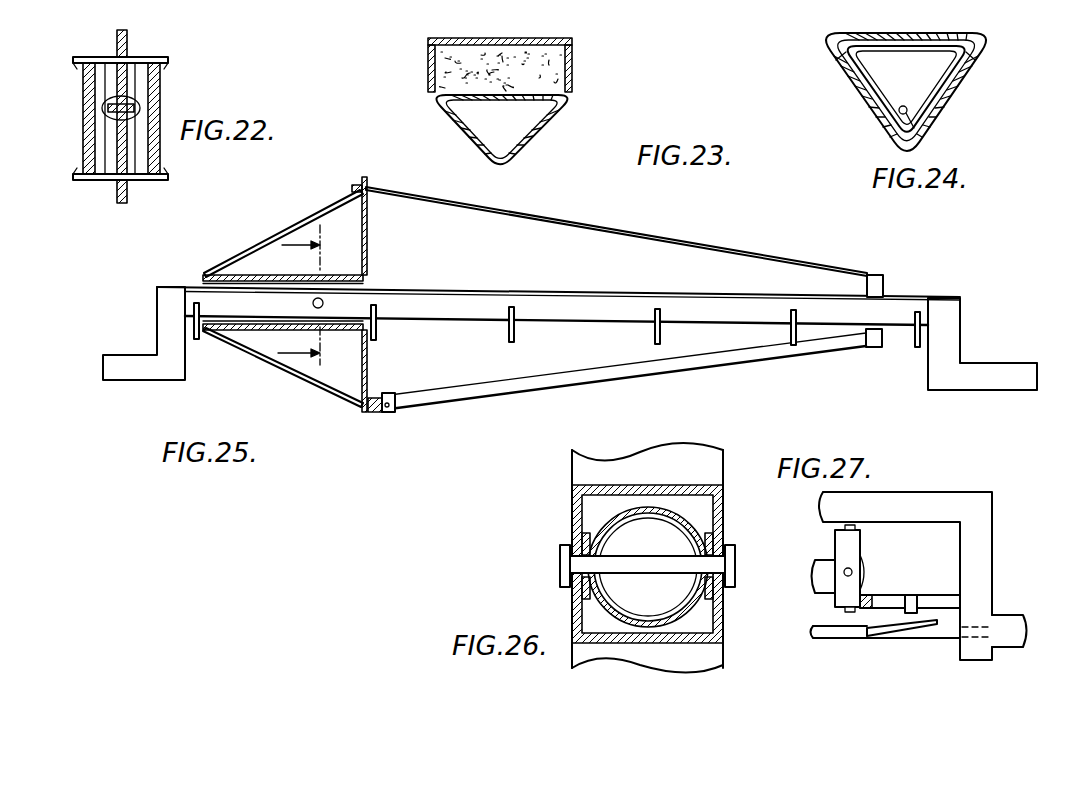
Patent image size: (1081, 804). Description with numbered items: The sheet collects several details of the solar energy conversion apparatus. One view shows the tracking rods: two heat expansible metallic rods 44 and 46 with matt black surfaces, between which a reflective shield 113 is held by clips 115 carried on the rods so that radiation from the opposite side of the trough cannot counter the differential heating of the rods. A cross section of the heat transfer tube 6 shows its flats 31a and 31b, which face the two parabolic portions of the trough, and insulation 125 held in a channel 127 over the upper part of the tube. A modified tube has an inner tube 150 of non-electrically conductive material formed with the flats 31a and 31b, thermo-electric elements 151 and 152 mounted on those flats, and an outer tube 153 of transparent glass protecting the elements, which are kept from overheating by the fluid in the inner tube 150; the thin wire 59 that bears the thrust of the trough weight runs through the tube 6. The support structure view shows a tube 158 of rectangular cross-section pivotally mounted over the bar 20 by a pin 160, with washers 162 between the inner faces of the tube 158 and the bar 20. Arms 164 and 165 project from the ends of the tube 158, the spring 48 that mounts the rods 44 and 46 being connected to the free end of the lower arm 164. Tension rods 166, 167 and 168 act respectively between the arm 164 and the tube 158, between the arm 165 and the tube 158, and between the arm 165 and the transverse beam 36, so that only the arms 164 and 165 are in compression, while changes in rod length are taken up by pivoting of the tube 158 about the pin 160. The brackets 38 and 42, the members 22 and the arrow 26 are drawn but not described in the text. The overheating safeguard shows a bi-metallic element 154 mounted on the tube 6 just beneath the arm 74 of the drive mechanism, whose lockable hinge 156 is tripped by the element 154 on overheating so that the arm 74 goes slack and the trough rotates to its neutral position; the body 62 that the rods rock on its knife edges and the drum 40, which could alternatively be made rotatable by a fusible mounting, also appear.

In FIG. 22, the reflective shield 113 is at (128, 38).
In FIG. 22, the clips 115 is at (103, 62).
In FIG. 22, the heat expansible metallic rod 44 is at (85, 137).
In FIG. 22, the heat expansible metallic rod 46 is at (150, 100).
In FIG. 25, the heat expansible metallic rod 46 is at (487, 392).
In FIG. 27, the heat expansible metallic rod 46 is at (830, 558).
In FIG. 23, the channel 127 is at (572, 74).
In FIG. 23, the insulation 125 is at (541, 73).
In FIG. 23, the heat transfer tube 6 is at (537, 113).
In FIG. 24, the heat transfer tube 6 is at (940, 68).
In FIG. 27, the heat transfer tube 6 is at (846, 637).
In FIG. 23, the flat 31a is at (443, 127).
In FIG. 24, the flat 31a is at (838, 75).
In FIG. 23, the flat 31b is at (538, 143).
In FIG. 24, the flat 31b is at (980, 78).
In FIG. 24, the inner tube 150 is at (822, 60).
In FIG. 24, the outer tube 153 is at (992, 67).
In FIG. 24, the thermo-electric element 151 is at (850, 113).
In FIG. 24, the thermo-electric element 152 is at (967, 117).
In FIG. 24, the thin wire 59 is at (930, 130).
In FIG. 25, the bar 20 is at (462, 302).
In FIG. 26, the bar 20 is at (597, 518).
In FIG. 25, the hanger 22 is at (200, 338).
In FIG. 25, the direction of movement 26 is at (290, 232).
In FIG. 25, the transverse beam 36 is at (877, 290).
In FIG. 25, the bracket 38 is at (950, 322).
In FIG. 27, the bracket 38 is at (982, 533).
In FIG. 25, the drum 40 is at (988, 372).
In FIG. 27, the drum 40 is at (1003, 627).
In FIG. 25, the left bracket 42 is at (130, 370).
In FIG. 25, the spring 48 is at (373, 414).
In FIG. 25, the tube of rectangular cross-section 158 is at (270, 330).
In FIG. 26, the tube of rectangular cross-section 158 is at (577, 503).
In FIG. 25, the pin 160 is at (321, 308).
In FIG. 26, the pin 160 is at (583, 565).
In FIG. 26, the washers 162 is at (583, 613).
In FIG. 25, the arm 164 is at (398, 412).
In FIG. 25, the arm 165 is at (368, 250).
In FIG. 25, the tension rod 166 is at (323, 392).
In FIG. 25, the tension rod 167 is at (302, 225).
In FIG. 25, the tension rod 168 is at (732, 235).
In FIG. 27, the body 62 is at (855, 543).
In FIG. 27, the arm 74 is at (940, 598).
In FIG. 27, the bi-metallic element 154 is at (888, 630).
In FIG. 27, the lockable hinge 156 is at (912, 598).